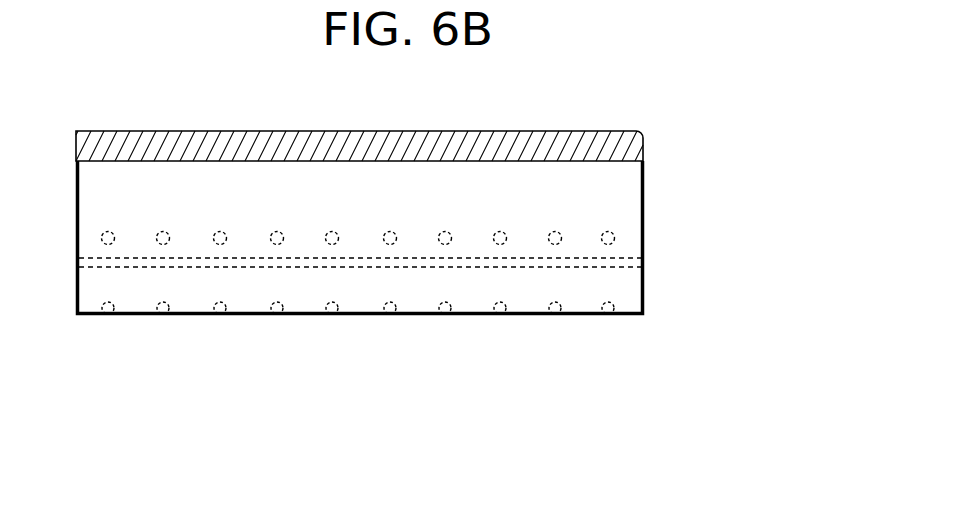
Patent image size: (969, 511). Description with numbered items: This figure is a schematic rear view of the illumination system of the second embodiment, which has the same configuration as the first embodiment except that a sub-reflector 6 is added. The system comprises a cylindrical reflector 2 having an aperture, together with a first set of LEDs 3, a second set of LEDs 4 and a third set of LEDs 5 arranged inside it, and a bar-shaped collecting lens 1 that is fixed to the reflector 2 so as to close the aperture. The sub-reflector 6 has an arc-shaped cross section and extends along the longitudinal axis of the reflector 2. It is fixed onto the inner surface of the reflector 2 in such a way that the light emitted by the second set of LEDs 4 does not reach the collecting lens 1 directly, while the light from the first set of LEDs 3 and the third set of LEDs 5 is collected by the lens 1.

The collecting lens 1 is at (644, 147).
The reflector 2 is at (645, 211).
The first set of LEDs 3 is at (453, 316).
The second set of LEDs 4 is at (220, 310).
The third set of LEDs 5 is at (502, 248).
The sub-reflector 6 is at (437, 268).